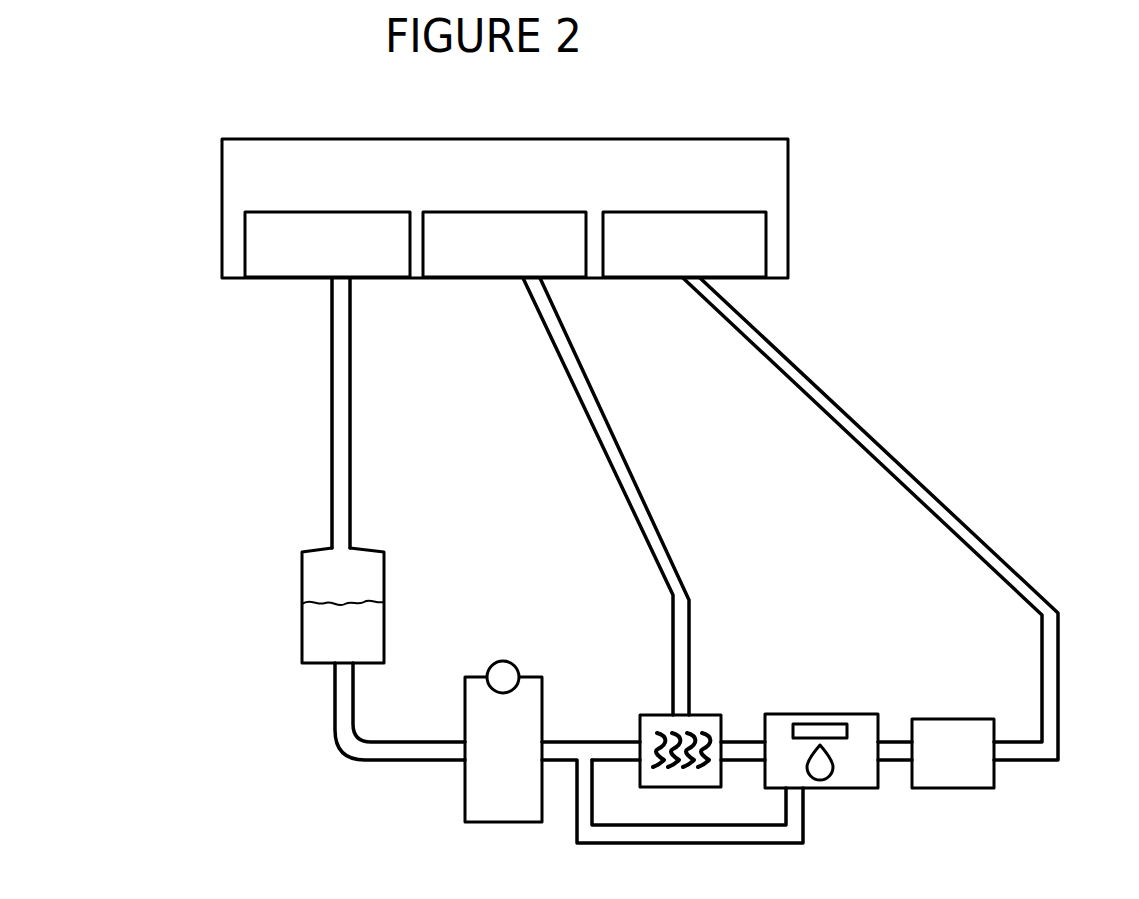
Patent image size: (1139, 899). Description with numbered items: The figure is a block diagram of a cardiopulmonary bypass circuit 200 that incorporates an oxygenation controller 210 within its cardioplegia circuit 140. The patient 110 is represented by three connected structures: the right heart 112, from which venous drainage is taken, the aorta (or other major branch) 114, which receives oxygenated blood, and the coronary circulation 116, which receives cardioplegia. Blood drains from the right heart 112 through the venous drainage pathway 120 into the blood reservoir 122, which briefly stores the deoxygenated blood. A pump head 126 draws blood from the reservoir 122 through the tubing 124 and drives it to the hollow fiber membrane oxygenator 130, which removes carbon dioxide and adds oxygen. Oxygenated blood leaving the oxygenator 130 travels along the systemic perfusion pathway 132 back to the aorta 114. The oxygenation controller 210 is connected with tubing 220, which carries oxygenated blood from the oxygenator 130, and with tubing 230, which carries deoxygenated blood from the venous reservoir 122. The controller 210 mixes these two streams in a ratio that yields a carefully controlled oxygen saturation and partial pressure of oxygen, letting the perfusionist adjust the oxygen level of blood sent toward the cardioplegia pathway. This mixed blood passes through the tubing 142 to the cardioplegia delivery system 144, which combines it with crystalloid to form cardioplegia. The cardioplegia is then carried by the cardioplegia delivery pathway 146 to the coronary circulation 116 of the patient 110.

The cardiopulmonary bypass circuit 200 is at (98, 334).
The patient 110 is at (222, 190).
The right heart 112 is at (348, 211).
The aorta (or other major branch) 114 is at (495, 211).
The coronary circulation 116 is at (684, 211).
The venous drainage pathway 120 is at (332, 413).
The blood reservoir 122 is at (302, 630).
The tubing 124 is at (335, 712).
The pump head 126 is at (465, 780).
The hollow fiber membrane oxygenator 130 is at (659, 712).
The systemic perfusion pathway 132 is at (606, 468).
The cardioplegia circuit 140 is at (1083, 609).
The tubing 142 is at (893, 762).
The cardioplegia delivery system 144 is at (948, 790).
The cardioplegia delivery pathway 146 is at (843, 412).
The oxygenation controller 210 is at (840, 712).
The tubing 220 is at (740, 740).
The tubing 230 is at (758, 845).